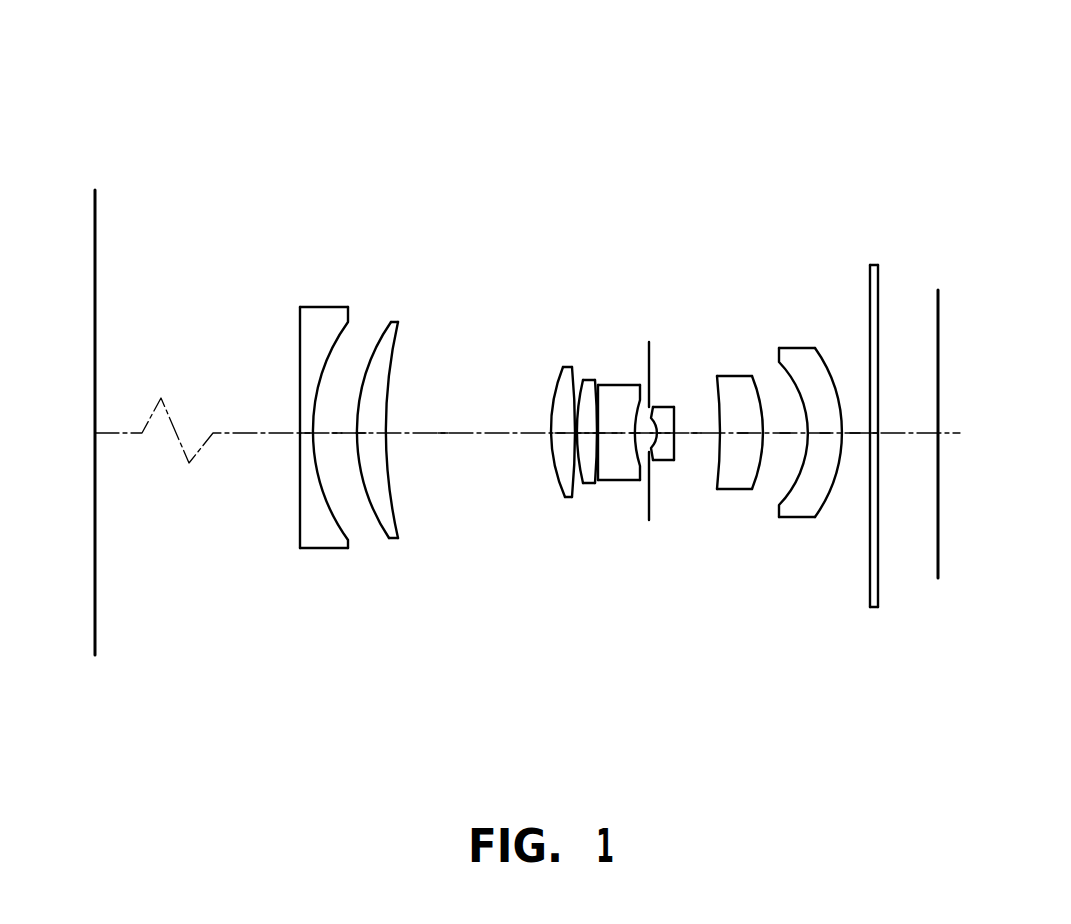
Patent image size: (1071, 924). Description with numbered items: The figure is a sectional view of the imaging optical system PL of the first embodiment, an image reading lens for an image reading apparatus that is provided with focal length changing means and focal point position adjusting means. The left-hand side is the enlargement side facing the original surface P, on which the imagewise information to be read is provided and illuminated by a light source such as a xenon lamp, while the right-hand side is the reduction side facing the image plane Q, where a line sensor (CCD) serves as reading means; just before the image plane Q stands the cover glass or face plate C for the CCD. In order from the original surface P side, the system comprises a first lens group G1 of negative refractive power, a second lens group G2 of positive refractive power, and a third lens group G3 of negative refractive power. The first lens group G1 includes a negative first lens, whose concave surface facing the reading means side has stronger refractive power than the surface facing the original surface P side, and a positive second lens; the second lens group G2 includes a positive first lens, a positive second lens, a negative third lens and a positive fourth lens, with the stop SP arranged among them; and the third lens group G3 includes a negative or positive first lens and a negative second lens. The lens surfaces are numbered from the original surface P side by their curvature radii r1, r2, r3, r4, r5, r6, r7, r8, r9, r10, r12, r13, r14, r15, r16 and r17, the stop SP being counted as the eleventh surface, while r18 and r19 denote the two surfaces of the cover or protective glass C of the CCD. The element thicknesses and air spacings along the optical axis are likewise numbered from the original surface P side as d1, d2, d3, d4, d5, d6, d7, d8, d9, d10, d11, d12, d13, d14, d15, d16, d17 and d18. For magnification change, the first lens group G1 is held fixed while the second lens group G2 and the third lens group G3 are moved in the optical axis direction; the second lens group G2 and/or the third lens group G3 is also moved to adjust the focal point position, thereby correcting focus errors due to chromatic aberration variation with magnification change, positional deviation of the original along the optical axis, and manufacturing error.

The imaging optical system PL is at (878, 83).
The first lens group G1 is at (222, 153).
The second lens group G2 is at (424, 153).
The third lens group G3 is at (886, 158).
The stop SP is at (649, 342).
The original surface P is at (95, 572).
The image plane Q is at (937, 555).
The cover glass C is at (908, 436).
The first lens surface r1 is at (298, 328).
The second lens surface r2 is at (343, 330).
The third lens surface r3 is at (391, 322).
The fourth lens surface r4 is at (397, 347).
The fifth lens surface r5 is at (558, 382).
The sixth lens surface r6 is at (566, 370).
The seventh lens surface r7 is at (585, 378).
The eighth lens surface r8 is at (594, 380).
The ninth lens surface r9 is at (597, 385).
The tenth lens surface r10 is at (640, 386).
The twelfth lens surface r12 is at (653, 407).
The thirteenth lens surface r13 is at (675, 405).
The fourteenth lens surface r14 is at (718, 378).
The fifteenth lens surface r15 is at (752, 376).
The sixteenth lens surface r16 is at (798, 348).
The seventeenth lens surface r17 is at (832, 347).
The cover glass surface r18 is at (870, 297).
The cover glass surface r19 is at (879, 297).
The first thickness or air spacing d1 is at (305, 433).
The second thickness or air spacing d2 is at (337, 433).
The third thickness or air spacing d3 is at (360, 435).
The fourth thickness or air spacing d4 is at (443, 433).
The fifth thickness or air spacing d5 is at (560, 433).
The sixth thickness or air spacing d6 is at (580, 433).
The seventh thickness or air spacing d7 is at (590, 433).
The eighth thickness or air spacing d8 is at (600, 433).
The ninth thickness or air spacing d9 is at (617, 433).
The tenth thickness or air spacing d10 is at (635, 433).
The eleventh thickness or air spacing d11 is at (655, 433).
The twelfth thickness or air spacing d12 is at (665, 433).
The thirteenth thickness or air spacing d13 is at (696, 433).
The fourteenth thickness or air spacing d14 is at (743, 433).
The fifteenth thickness or air spacing d15 is at (785, 433).
The sixteenth thickness or air spacing d16 is at (825, 433).
The seventeenth thickness or air spacing d17 is at (855, 433).
The eighteenth thickness or air spacing d18 is at (871, 460).